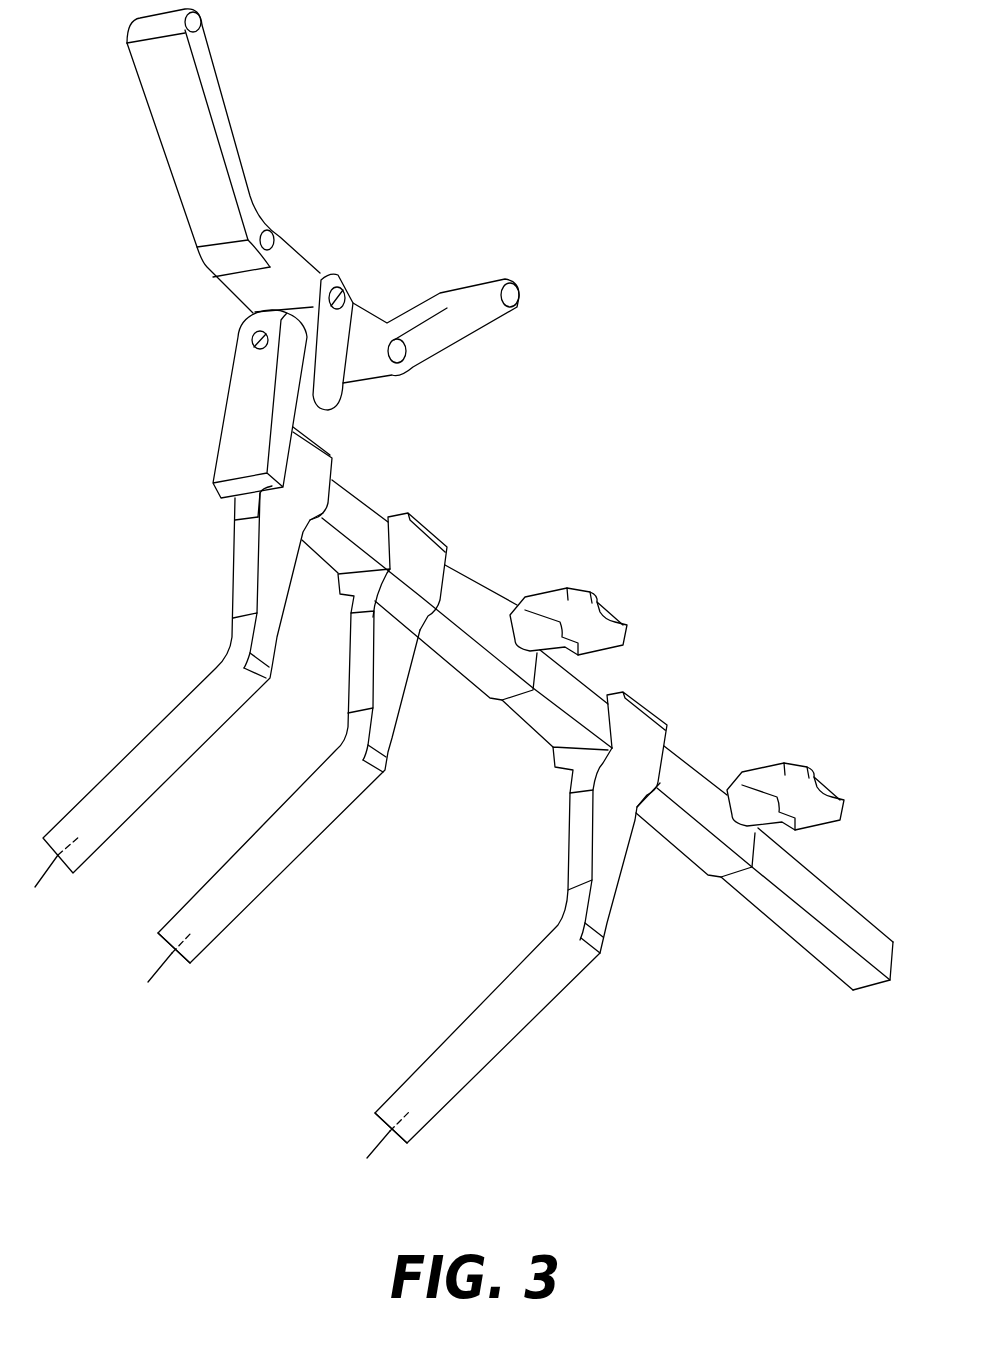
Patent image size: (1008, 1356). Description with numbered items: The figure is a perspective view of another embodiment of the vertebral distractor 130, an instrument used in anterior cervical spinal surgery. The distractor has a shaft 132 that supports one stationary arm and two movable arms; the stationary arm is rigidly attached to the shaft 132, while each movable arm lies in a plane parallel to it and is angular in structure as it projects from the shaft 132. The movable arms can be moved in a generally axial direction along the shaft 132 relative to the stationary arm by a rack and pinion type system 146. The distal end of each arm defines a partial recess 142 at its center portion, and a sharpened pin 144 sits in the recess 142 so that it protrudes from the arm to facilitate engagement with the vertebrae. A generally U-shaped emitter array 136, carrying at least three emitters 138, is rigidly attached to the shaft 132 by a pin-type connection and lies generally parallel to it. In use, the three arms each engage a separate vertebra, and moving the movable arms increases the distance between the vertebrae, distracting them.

The vertebral distractor 130 is at (130, 525).
The shaft 132 is at (841, 908).
The emitter array 136 is at (244, 180).
The emitter 138 is at (202, 24).
The partial recess 142 is at (193, 940).
The pin 144 is at (168, 967).
The rack and pinion type system 146 is at (571, 610).